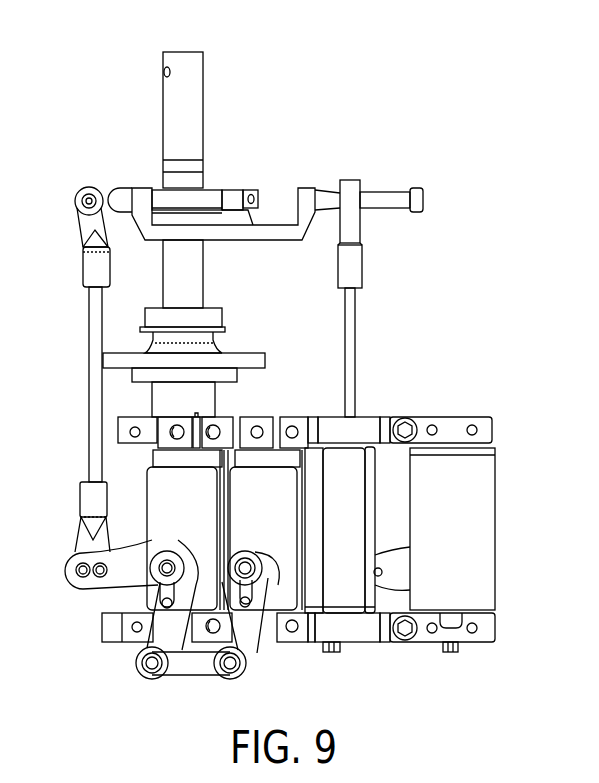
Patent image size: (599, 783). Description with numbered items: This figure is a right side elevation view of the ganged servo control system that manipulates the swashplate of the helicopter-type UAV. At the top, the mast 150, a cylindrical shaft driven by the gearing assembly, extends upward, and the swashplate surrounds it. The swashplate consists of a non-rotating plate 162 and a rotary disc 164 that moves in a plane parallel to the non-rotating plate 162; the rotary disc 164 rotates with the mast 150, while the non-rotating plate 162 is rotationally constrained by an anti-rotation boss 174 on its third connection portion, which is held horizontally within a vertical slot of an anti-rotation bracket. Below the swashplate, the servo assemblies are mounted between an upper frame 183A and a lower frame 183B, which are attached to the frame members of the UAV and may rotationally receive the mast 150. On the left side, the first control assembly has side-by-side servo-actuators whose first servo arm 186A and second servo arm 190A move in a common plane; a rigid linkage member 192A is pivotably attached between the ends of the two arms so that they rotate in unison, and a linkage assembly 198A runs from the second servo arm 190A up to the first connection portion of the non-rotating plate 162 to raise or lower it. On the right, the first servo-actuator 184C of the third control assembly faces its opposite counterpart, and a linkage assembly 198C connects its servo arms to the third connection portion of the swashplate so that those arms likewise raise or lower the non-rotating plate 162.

The mast 150 is at (197, 80).
The non-rotating plate 162 is at (306, 193).
The rotary disc 164 is at (232, 195).
The anti-rotation boss 174 is at (397, 200).
The linkage assembly 198C is at (350, 342).
The linkage assembly 198A is at (88, 408).
The upper frame 183A is at (363, 430).
The first servo-actuator 184C is at (487, 535).
The lower frame 183B is at (365, 628).
The second servo arm 190A is at (140, 580).
The first servo arm 186A is at (263, 643).
The linkage member 192A is at (197, 666).